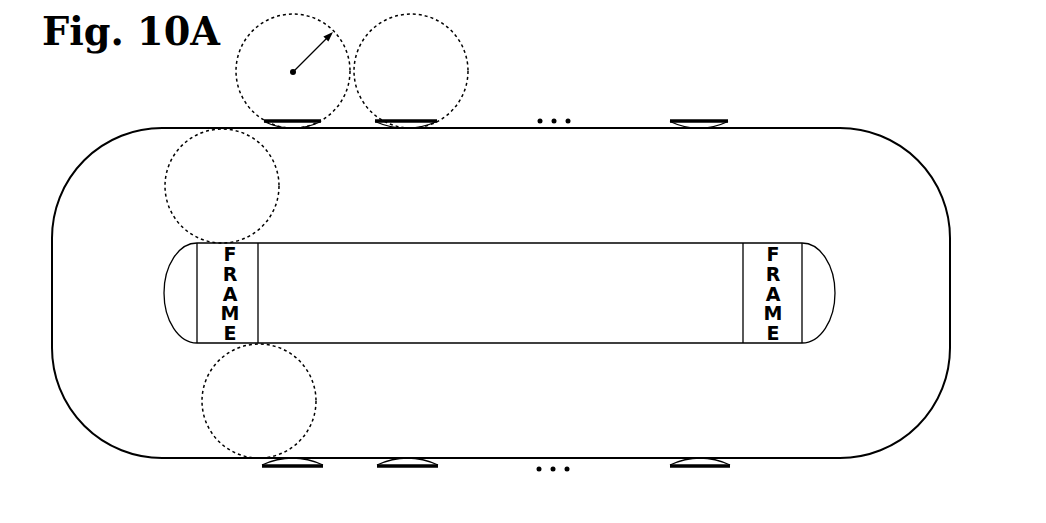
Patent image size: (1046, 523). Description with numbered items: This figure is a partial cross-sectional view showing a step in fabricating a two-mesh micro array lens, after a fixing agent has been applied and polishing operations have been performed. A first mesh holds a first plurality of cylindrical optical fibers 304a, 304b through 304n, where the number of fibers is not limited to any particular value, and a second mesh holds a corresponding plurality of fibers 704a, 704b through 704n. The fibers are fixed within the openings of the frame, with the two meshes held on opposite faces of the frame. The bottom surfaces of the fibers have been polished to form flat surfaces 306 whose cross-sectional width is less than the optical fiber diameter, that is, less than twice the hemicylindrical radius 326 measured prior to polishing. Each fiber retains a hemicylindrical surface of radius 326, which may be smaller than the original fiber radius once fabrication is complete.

The flat bottom surface 306 is at (281, 116).
The cylindrical optical fiber 304a is at (318, 102).
The cylindrical optical fiber 304b is at (410, 121).
The cylindrical optical fiber 304n is at (700, 121).
The hemicylindrical radius 326 is at (292, 68).
The lower roller 704a is at (293, 463).
The lower roller 704b is at (408, 463).
The lower roller 704n is at (700, 463).